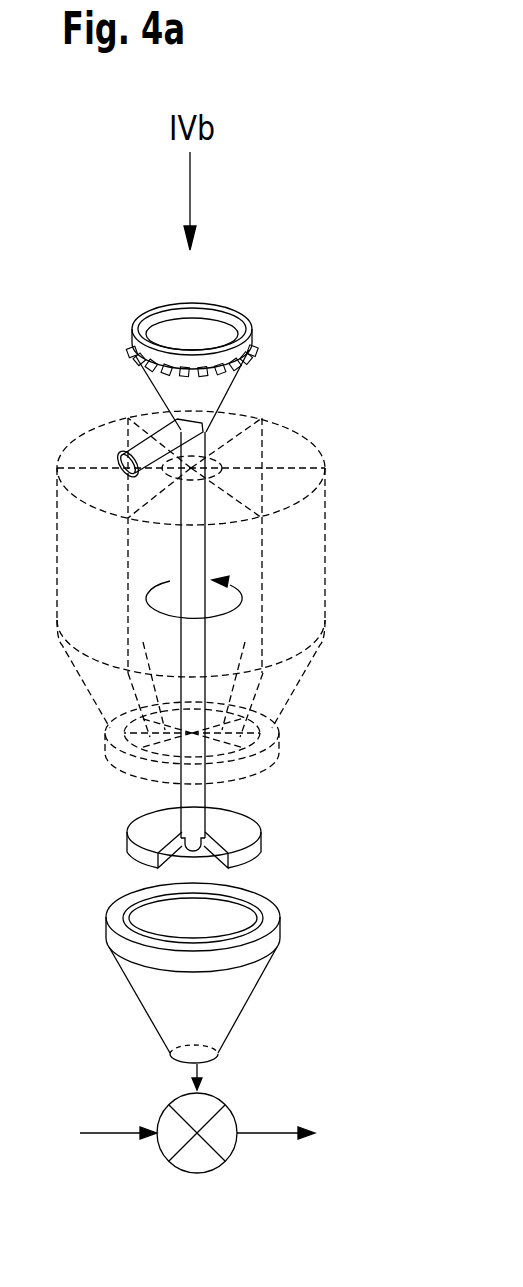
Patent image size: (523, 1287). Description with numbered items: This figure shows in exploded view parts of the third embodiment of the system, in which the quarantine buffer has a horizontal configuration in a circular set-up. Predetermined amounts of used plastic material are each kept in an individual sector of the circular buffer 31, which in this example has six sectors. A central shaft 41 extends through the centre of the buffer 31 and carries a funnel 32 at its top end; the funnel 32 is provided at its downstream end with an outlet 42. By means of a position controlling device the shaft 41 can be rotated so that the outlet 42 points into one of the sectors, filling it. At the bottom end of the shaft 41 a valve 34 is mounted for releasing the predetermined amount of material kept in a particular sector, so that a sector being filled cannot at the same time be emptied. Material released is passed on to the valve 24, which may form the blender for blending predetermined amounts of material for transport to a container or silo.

The funnel 32 is at (222, 392).
The circular buffer 31 is at (327, 540).
The outlet 42 is at (110, 490).
The central shaft 41 is at (196, 798).
The valve 34 is at (137, 824).
The valve 24 is at (212, 1170).